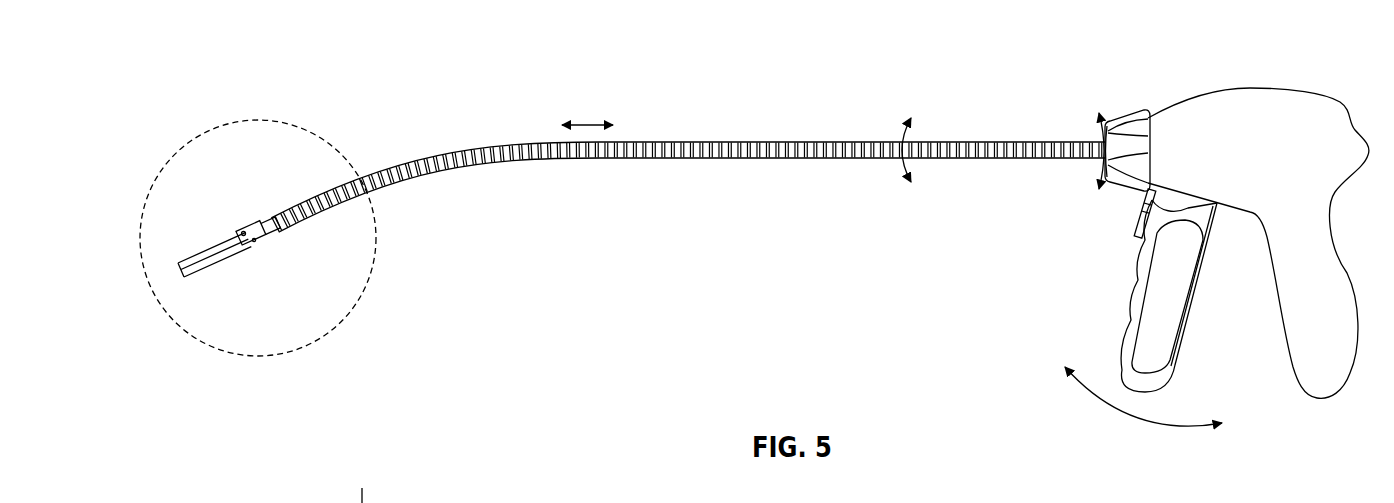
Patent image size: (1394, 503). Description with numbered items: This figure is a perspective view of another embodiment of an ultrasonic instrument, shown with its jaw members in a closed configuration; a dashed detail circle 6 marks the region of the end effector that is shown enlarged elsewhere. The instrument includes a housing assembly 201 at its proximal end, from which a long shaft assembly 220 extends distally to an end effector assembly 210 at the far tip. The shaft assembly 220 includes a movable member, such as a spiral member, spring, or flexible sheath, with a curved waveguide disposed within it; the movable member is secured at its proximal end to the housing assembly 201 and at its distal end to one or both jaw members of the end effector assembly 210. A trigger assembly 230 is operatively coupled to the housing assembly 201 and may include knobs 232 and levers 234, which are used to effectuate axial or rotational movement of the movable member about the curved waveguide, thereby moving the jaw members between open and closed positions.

The detail view circle (FIG. 6 region) 6 is at (258, 120).
The housing assembly 201 is at (1253, 88).
The end effector assembly 210 is at (217, 267).
The shaft assembly 220 is at (787, 142).
The trigger assembly 230 is at (1118, 207).
The knobs 232 is at (1137, 113).
The levers 234 is at (1187, 333).